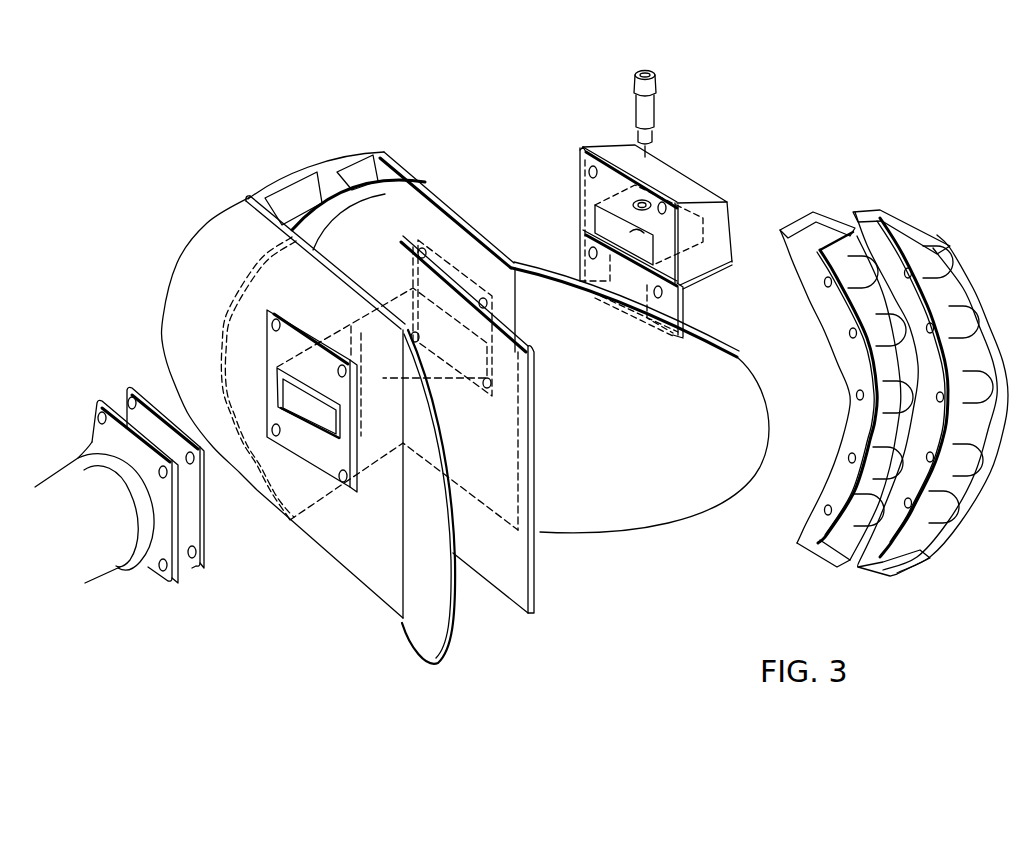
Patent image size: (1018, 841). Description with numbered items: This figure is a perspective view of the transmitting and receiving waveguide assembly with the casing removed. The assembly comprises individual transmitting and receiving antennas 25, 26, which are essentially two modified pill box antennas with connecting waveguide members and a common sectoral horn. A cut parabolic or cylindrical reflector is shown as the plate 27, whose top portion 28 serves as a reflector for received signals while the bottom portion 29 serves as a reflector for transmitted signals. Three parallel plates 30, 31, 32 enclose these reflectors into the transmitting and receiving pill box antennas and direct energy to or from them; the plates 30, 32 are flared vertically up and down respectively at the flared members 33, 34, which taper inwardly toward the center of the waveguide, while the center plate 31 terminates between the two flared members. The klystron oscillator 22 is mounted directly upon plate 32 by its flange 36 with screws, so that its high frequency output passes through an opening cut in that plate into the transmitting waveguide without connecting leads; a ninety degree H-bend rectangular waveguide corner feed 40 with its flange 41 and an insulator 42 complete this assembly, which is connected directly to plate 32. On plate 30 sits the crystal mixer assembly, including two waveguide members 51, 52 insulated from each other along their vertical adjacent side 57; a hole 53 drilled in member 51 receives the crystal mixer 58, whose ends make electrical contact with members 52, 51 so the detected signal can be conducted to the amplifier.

The klystron oscillator 22 is at (63, 473).
The transmitting antenna 25 is at (392, 269).
The receiving antenna 26 is at (438, 225).
The plate 27 is at (330, 153).
The top portion 28 is at (390, 192).
The bottom portion 29 is at (312, 237).
The parallel plate 30 is at (462, 213).
The center plate 31 is at (539, 355).
The parallel plate 32 is at (342, 573).
The flared member 33 is at (652, 526).
The flared member 34 is at (413, 650).
The flange 36 is at (178, 583).
The H-bend rectangular waveguide corner feed 40 is at (350, 327).
The flange 41 is at (350, 490).
The insulator 42 is at (203, 565).
The waveguide member 51 is at (720, 193).
The waveguide member 52 is at (723, 268).
The hole 53 is at (653, 200).
The vertical adjacent side 57 is at (697, 267).
The crystal mixer 58 is at (659, 95).